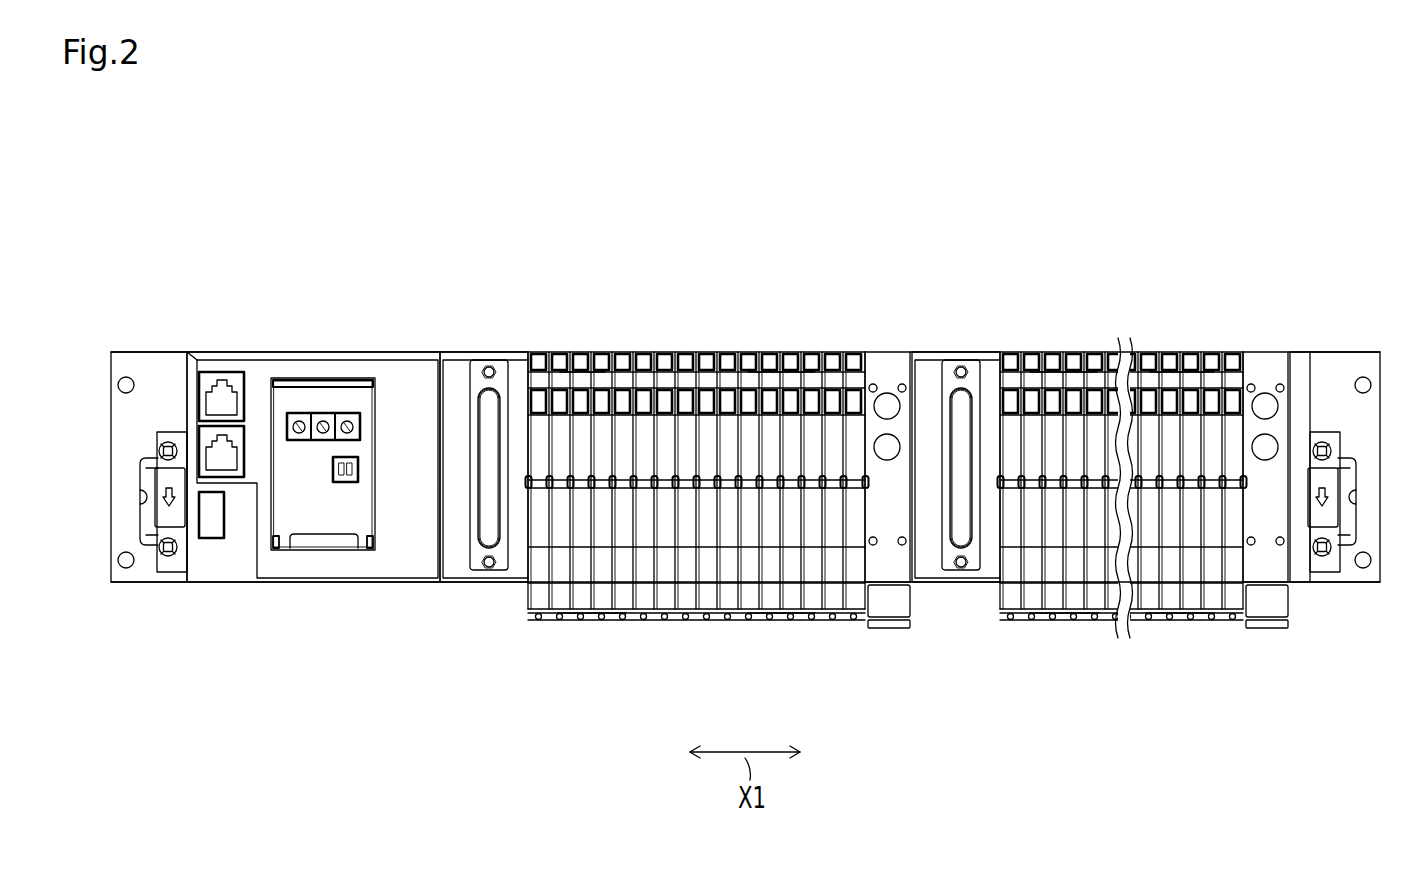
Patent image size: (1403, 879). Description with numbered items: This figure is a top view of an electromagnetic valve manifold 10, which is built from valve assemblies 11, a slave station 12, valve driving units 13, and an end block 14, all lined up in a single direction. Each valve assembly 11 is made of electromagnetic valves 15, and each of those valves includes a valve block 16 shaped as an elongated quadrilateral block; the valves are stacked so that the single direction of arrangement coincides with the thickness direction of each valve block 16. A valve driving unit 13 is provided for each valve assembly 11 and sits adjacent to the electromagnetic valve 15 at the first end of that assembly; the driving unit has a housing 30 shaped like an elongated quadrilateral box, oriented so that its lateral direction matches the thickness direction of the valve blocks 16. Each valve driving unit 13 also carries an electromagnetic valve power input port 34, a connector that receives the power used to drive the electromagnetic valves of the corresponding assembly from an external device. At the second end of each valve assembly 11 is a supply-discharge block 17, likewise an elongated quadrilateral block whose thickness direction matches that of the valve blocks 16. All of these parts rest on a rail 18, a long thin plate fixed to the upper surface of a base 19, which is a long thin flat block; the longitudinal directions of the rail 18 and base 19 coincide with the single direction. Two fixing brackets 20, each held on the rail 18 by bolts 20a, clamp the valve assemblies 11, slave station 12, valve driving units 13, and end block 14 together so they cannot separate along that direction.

The electromagnetic valve manifold 10 is at (232, 281).
The valve assembly 11 is at (886, 473).
The slave station 12 is at (348, 352).
The valve driving unit 13 is at (719, 462).
The end block 14 is at (1298, 352).
The electromagnetic valve 15 is at (602, 352).
The valve block 16 is at (623, 605).
The supply-discharge block 17 is at (880, 352).
The rail 18 is at (152, 540).
The base 19 is at (158, 352).
The fixing bracket 20 is at (170, 567).
The bolt 20a is at (160, 448).
The housing 30 is at (487, 352).
The electromagnetic valve power input port 34 is at (486, 508).